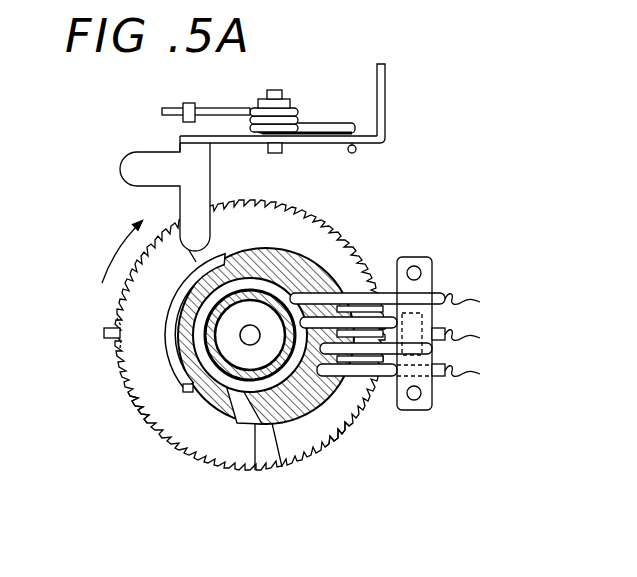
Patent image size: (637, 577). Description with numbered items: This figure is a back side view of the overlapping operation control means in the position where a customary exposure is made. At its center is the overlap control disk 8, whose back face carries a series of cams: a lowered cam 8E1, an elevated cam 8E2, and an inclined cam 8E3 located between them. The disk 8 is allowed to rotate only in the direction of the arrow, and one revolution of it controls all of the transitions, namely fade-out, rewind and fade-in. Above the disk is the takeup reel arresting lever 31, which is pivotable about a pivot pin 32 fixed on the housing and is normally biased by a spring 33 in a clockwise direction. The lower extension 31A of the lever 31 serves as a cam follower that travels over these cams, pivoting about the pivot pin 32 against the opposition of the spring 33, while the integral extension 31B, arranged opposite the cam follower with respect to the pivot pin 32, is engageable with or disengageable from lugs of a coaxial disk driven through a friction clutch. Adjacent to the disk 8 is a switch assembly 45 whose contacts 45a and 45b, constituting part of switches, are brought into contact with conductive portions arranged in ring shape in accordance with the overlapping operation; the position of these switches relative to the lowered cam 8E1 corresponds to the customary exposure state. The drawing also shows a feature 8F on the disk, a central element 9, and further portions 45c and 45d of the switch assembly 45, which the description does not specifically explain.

The overlap control disk 8 is at (318, 235).
The lowered cam 8E1 is at (145, 400).
The elevated cam 8E2 is at (338, 420).
The inclined cam 8E3 is at (265, 455).
The stop projection of ratchet wheel 8F is at (104, 334).
The shaft 9 is at (257, 328).
The takeup reel arresting lever 31 is at (322, 144).
The lower extension 31A is at (199, 232).
The integral extension 31B is at (386, 77).
The pivot pin 32 is at (278, 92).
The spring 33 is at (209, 113).
The switch assembly 45 is at (322, 339).
The contact 45a is at (347, 320).
The contact 45b is at (355, 350).
The arcuate cam band 45c is at (190, 392).
The cam projection 45d is at (238, 394).